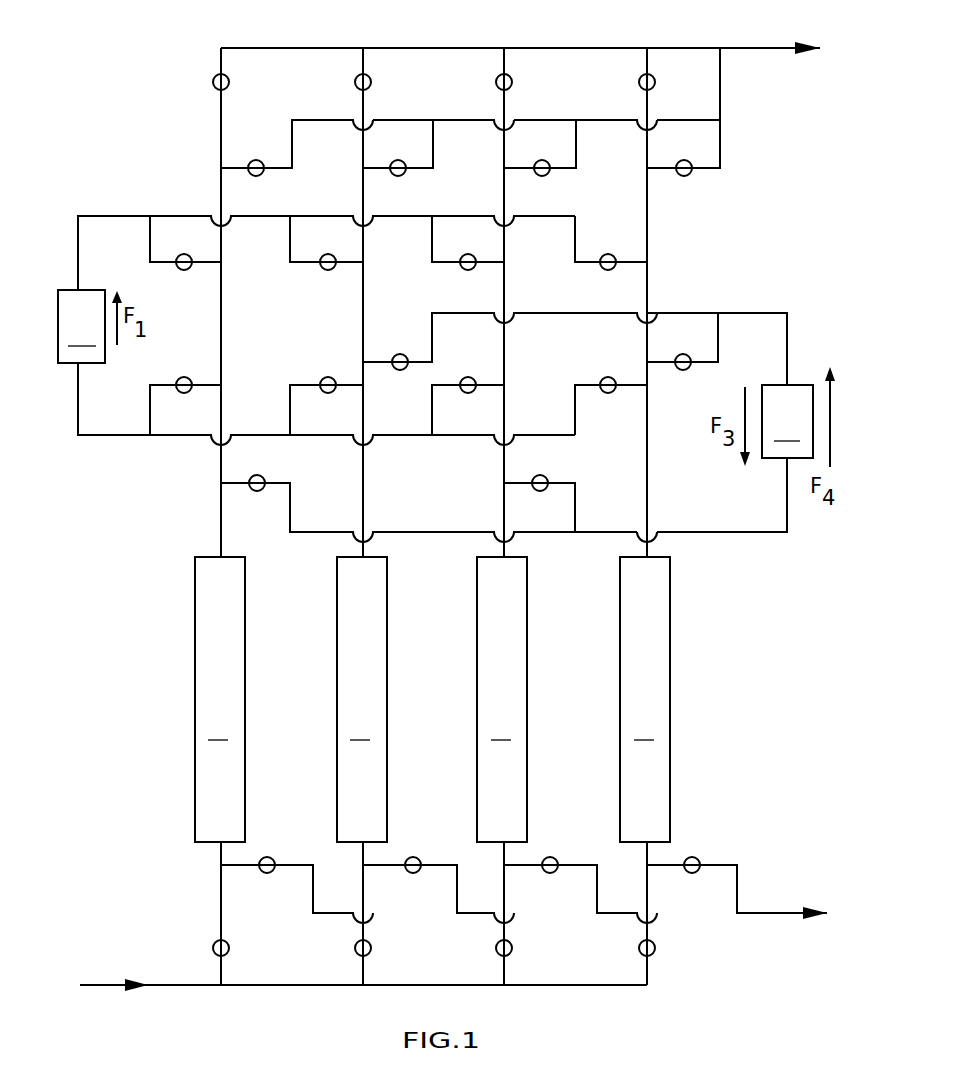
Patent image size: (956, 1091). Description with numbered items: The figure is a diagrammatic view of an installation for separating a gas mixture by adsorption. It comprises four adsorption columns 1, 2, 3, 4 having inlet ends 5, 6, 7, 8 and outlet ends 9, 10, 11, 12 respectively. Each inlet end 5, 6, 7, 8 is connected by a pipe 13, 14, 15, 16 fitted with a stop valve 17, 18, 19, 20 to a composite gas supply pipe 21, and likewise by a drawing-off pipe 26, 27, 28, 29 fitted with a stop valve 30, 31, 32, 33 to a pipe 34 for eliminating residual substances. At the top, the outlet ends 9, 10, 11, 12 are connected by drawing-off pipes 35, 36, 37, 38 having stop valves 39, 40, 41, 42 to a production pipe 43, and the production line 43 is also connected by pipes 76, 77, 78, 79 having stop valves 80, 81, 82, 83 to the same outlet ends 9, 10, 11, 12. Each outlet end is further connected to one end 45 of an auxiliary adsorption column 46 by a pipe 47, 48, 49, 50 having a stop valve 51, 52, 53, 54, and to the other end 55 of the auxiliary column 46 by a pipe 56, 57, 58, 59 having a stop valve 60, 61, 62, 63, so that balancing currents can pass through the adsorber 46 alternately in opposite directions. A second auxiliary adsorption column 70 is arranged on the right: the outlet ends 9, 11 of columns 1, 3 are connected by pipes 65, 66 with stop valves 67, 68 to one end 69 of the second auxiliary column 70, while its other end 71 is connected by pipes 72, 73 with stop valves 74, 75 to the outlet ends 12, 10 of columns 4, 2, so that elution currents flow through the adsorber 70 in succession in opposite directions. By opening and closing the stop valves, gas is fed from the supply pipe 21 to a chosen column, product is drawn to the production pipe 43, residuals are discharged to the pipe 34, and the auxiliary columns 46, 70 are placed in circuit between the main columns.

The adsorption column 1 is at (220, 699).
The adsorption column 2 is at (362, 699).
The adsorption column 3 is at (502, 699).
The adsorption column 4 is at (645, 699).
The inlet end 5 is at (221, 845).
The inlet end 6 is at (363, 845).
The inlet end 7 is at (504, 845).
The inlet end 8 is at (647, 845).
The outlet end 9 is at (222, 556).
The outlet end 10 is at (366, 555).
The outlet end 11 is at (507, 555).
The outlet end 12 is at (650, 553).
The pipe 13 is at (222, 925).
The pipe 14 is at (364, 930).
The pipe 15 is at (505, 930).
The pipe 16 is at (648, 930).
The stop valve 17 is at (229, 952).
The stop valve 18 is at (371, 952).
The stop valve 19 is at (512, 952).
The stop valve 20 is at (655, 952).
The composite gas supply pipe 21 is at (120, 982).
The drawing-off pipe 26 is at (313, 870).
The drawing-off pipe 27 is at (457, 870).
The drawing-off pipe 28 is at (597, 870).
The drawing-off pipe 29 is at (737, 870).
The stop valve 30 is at (269, 857).
The stop valve 31 is at (415, 857).
The stop valve 32 is at (556, 857).
The stop valve 33 is at (695, 857).
The pipe for eliminating residual substances 34 is at (781, 910).
The drawing-off pipe 35 is at (221, 330).
The drawing-off pipe 36 is at (363, 335).
The drawing-off pipe 37 is at (504, 340).
The drawing-off pipe 38 is at (647, 288).
The stop valve 39 is at (229, 86).
The stop valve 40 is at (371, 86).
The stop valve 41 is at (512, 86).
The stop valve 42 is at (655, 86).
The production pipe 43 is at (771, 48).
The end of auxiliary adsorption column 45 is at (78, 290).
The auxiliary adsorption column 46 is at (81, 326).
The pipe 47 is at (151, 242).
The pipe 48 is at (293, 257).
The pipe 49 is at (432, 252).
The pipe 50 is at (575, 245).
The stop valve 51 is at (191, 268).
The stop valve 52 is at (336, 268).
The stop valve 53 is at (476, 268).
The stop valve 54 is at (616, 268).
The other end of auxiliary adsorption column 55 is at (78, 363).
The pipe 56 is at (150, 421).
The pipe 57 is at (290, 425).
The pipe 58 is at (432, 424).
The pipe 59 is at (575, 425).
The stop valve 60 is at (188, 376).
The stop valve 61 is at (336, 376).
The stop valve 62 is at (470, 376).
The stop valve 63 is at (614, 375).
The pipe 65 is at (290, 510).
The pipe 66 is at (575, 510).
The stop valve 67 is at (258, 475).
The stop valve 68 is at (547, 477).
The end of second auxiliary adsorption column 69 is at (787, 459).
The second auxiliary adsorption column 70 is at (787, 421).
The other end of second auxiliary adsorption column 71 is at (787, 385).
The pipe 72 is at (718, 345).
The pipe 73 is at (432, 312).
The stop valve 74 is at (690, 369).
The stop valve 75 is at (395, 369).
The pipe 76 is at (292, 170).
The pipe 77 is at (433, 170).
The pipe 78 is at (576, 170).
The pipe 79 is at (720, 170).
The stop valve 80 is at (256, 160).
The stop valve 81 is at (404, 150).
The stop valve 82 is at (541, 150).
The stop valve 83 is at (698, 140).